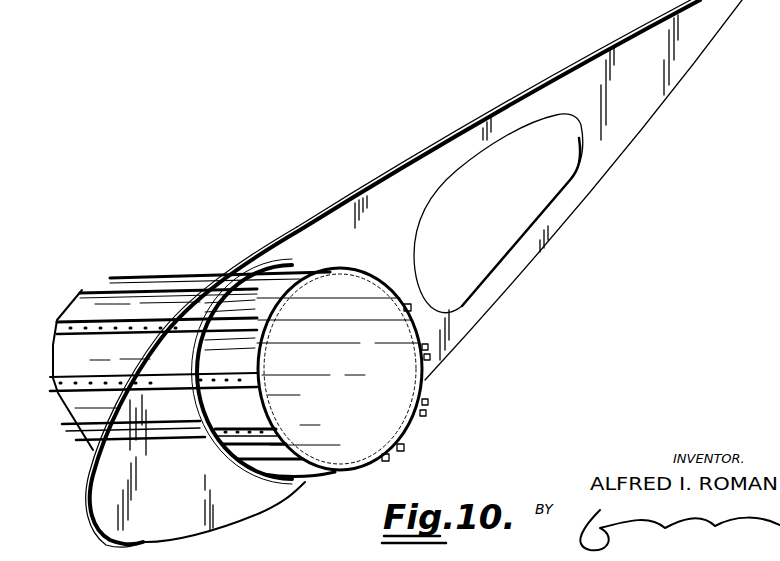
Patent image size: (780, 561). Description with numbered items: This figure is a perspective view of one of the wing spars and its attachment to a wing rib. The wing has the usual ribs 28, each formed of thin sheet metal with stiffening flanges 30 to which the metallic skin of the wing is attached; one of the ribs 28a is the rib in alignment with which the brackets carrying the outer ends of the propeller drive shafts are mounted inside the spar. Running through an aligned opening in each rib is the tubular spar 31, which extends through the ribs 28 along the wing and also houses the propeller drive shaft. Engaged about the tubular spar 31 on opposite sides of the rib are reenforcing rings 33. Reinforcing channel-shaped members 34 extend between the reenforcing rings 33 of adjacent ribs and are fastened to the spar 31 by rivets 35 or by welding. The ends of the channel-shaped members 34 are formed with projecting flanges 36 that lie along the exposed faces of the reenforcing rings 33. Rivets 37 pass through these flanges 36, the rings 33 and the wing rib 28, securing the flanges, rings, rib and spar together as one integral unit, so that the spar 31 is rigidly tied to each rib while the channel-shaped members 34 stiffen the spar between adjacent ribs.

The wing rib 28 is at (103, 502).
The wing rib 28a is at (613, 156).
The stiffening flange 30 is at (350, 204).
The tubular spar 31 is at (78, 312).
The reenforcing ring 33 is at (196, 360).
The reinforcing channel-shaped member 34 is at (406, 303).
The rivet 35 is at (62, 391).
The projecting flange 36 is at (225, 318).
The rivet 37 is at (230, 347).